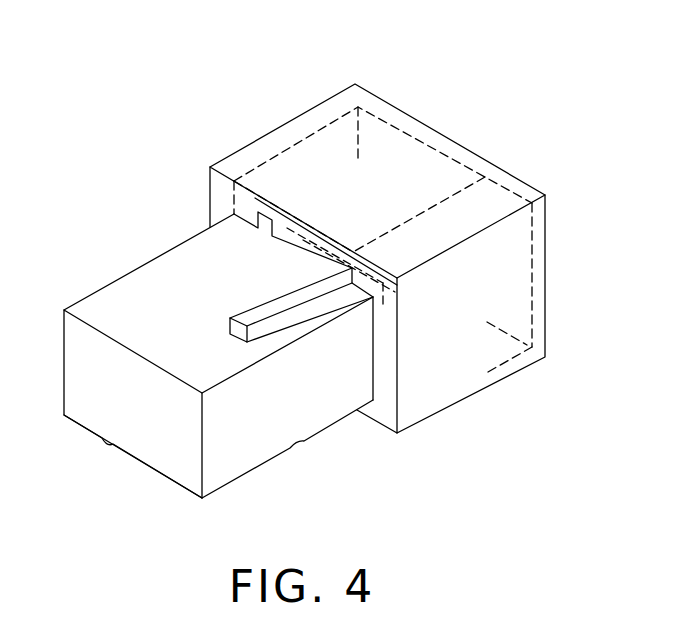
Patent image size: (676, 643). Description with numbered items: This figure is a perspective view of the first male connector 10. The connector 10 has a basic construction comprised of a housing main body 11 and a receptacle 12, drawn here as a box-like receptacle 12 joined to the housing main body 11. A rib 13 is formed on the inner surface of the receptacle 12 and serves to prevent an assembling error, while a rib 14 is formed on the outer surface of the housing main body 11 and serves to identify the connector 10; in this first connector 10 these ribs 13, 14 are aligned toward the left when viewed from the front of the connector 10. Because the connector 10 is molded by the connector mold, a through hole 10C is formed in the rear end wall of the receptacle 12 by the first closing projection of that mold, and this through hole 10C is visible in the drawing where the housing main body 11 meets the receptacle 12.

The first male connector 10 is at (391, 88).
The through hole 10C is at (268, 232).
The housing main body 11 is at (253, 457).
The receptacle 12 is at (449, 390).
The rib 13 is at (513, 178).
The rib 14 is at (309, 300).